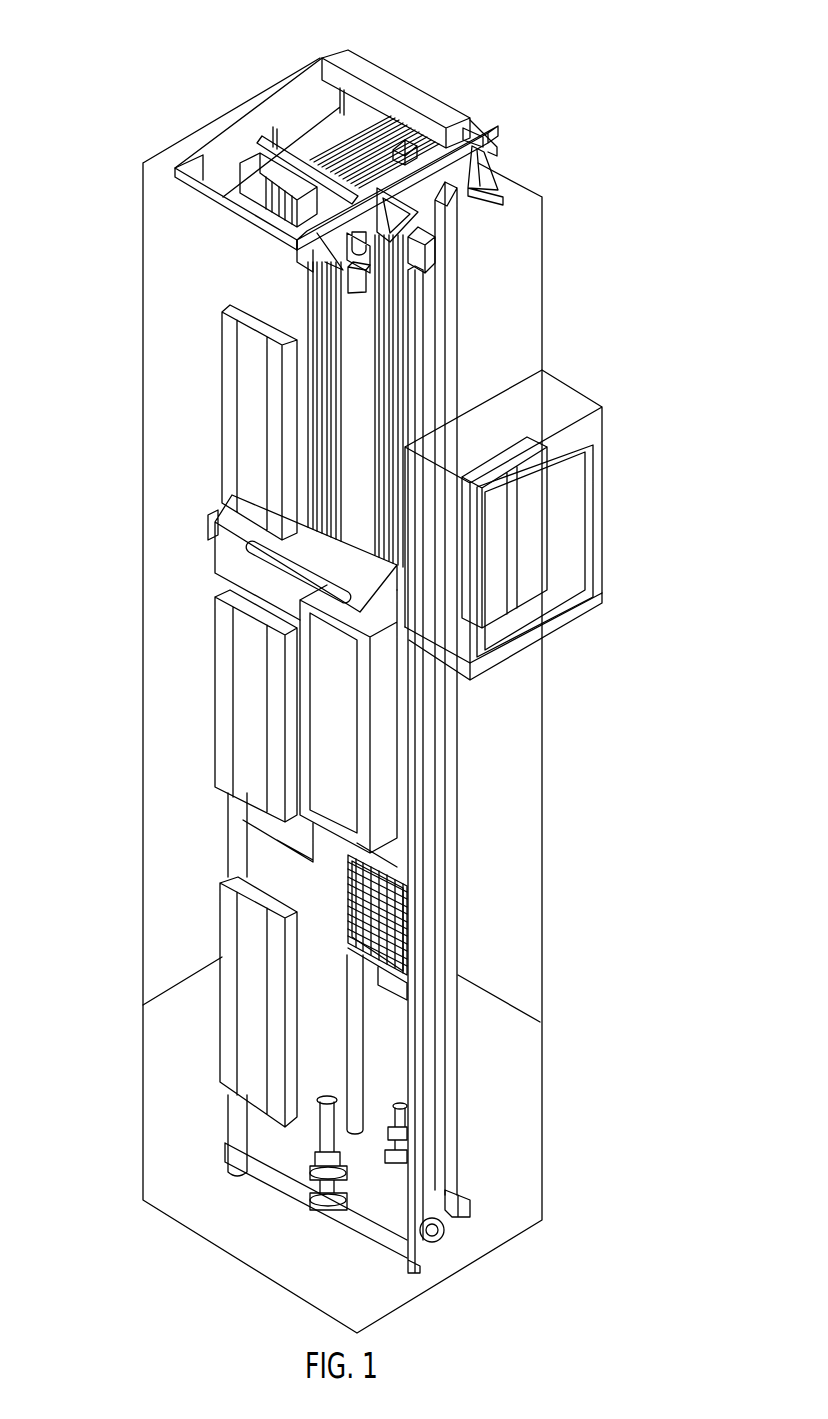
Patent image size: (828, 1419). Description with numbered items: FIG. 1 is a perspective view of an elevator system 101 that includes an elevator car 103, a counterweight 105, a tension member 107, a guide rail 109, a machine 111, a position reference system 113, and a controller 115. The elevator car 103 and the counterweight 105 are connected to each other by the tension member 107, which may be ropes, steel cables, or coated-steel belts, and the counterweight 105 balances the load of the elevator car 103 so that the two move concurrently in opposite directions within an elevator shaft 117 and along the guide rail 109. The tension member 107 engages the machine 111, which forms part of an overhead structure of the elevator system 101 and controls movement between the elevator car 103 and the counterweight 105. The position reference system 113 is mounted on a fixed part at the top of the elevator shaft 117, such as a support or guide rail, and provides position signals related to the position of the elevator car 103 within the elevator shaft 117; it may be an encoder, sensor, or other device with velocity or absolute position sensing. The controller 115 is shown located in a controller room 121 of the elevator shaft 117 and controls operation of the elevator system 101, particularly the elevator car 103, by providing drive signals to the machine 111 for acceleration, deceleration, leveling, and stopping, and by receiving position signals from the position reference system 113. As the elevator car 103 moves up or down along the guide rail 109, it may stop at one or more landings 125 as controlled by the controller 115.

The elevator system 101 is at (560, 83).
The elevator car 103 is at (343, 737).
The counterweight 105 is at (393, 929).
The tension member 107 is at (345, 412).
The guide rail 109 is at (430, 853).
The machine 111 is at (250, 160).
The position reference system 113 is at (430, 253).
The controller 115 is at (543, 540).
The elevator shaft 117 is at (198, 856).
The controller room 121 is at (608, 402).
The landings 125 is at (222, 411).